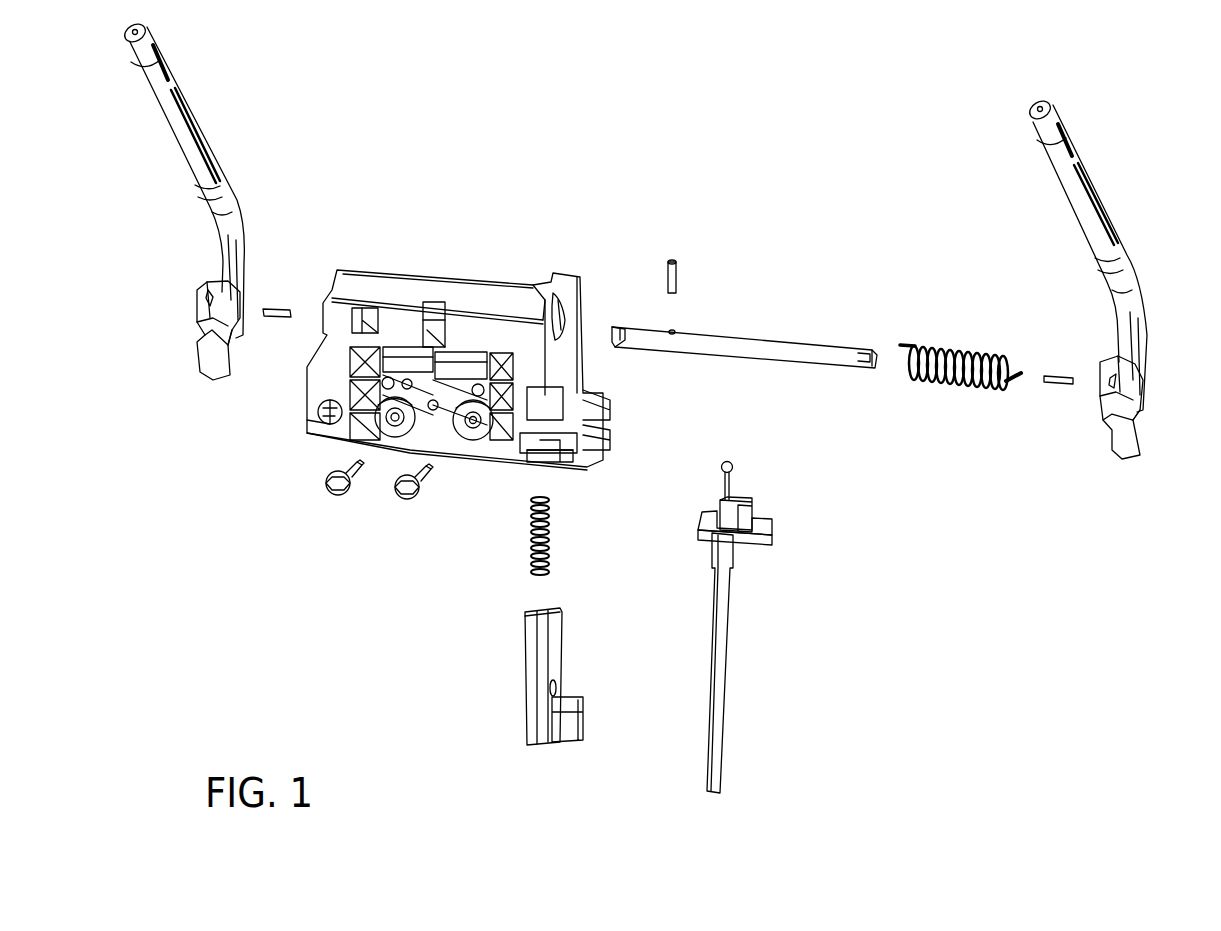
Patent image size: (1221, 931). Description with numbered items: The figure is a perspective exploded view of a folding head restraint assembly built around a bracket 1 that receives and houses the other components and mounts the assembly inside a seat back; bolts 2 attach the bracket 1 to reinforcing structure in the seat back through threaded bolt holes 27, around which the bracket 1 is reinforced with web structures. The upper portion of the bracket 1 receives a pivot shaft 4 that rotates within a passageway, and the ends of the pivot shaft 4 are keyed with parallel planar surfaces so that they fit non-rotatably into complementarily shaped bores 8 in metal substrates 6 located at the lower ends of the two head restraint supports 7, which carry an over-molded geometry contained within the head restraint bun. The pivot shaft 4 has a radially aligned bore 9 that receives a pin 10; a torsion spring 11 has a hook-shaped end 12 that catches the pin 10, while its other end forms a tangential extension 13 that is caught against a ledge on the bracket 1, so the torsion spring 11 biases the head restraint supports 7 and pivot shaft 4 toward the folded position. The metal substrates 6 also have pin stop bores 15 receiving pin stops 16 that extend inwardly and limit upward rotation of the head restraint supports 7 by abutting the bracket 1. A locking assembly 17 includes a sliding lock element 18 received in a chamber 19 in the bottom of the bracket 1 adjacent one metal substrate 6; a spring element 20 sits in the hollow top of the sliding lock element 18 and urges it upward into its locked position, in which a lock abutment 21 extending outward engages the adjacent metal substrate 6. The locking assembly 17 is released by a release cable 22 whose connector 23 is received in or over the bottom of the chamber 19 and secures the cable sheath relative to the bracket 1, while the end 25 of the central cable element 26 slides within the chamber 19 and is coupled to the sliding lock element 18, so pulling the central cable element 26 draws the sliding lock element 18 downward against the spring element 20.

The bracket 1 is at (447, 277).
The bolts 2 is at (327, 490).
The pivot shaft 4 is at (783, 340).
The metal substrates 6 is at (207, 331).
The head restraint supports 7 is at (226, 137).
The bores 8 is at (207, 290).
The radially aligned bore 9 is at (674, 330).
The pin 10 is at (680, 281).
The torsion spring 11 is at (973, 346).
The hook-shaped end 12 is at (903, 343).
The tangential extension 13 is at (1011, 385).
The pin stop bores 15 is at (228, 332).
The pin stops 16 is at (278, 302).
The locking assembly 17 is at (433, 633).
The sliding lock element 18 is at (523, 677).
The chamber 19 is at (553, 467).
The spring element 20 is at (552, 540).
The lock abutment 21 is at (573, 697).
The release cable 22 is at (723, 727).
The connector 23 is at (770, 536).
The end 25 is at (733, 465).
The central cable element 26 is at (725, 486).
The threaded bolt holes 27 is at (400, 428).